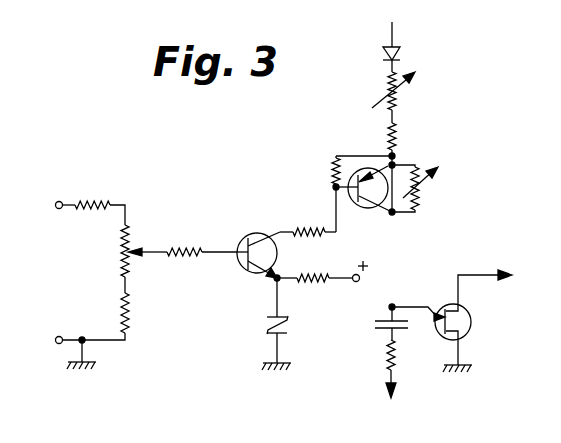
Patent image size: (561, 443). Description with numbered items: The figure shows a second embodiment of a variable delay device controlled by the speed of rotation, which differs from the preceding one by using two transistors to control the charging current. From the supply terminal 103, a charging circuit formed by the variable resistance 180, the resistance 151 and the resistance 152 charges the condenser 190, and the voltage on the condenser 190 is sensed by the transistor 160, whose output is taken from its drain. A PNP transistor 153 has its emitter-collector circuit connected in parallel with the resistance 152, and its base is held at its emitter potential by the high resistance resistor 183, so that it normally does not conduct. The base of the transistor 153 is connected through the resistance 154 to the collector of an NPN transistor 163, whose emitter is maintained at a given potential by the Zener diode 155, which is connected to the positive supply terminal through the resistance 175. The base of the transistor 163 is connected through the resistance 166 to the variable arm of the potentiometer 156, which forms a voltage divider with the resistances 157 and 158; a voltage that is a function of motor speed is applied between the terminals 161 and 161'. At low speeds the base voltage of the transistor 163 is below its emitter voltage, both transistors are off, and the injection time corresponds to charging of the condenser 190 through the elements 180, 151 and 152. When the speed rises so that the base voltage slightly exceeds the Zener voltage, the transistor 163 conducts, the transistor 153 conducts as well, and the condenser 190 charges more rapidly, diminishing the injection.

The supply terminal 103 is at (406, 44).
The variable resistance 180 is at (398, 100).
The resistance 151 is at (398, 135).
The high resistance resistor 183 is at (332, 168).
The PNP transistor 153 is at (365, 200).
The resistance 152 is at (427, 192).
The resistance 154 is at (307, 224).
The NPN transistor 163 is at (264, 233).
The resistance 175 is at (313, 274).
The Zener diode 155 is at (268, 333).
The resistance 166 is at (188, 246).
The terminal 161' is at (50, 204).
The resistance 157 is at (100, 200).
The potentiometer 156 is at (120, 240).
The resistance 158 is at (120, 306).
The terminal 161 is at (61, 348).
The condenser 190 is at (378, 331).
The field effect transistor 160 is at (472, 325).